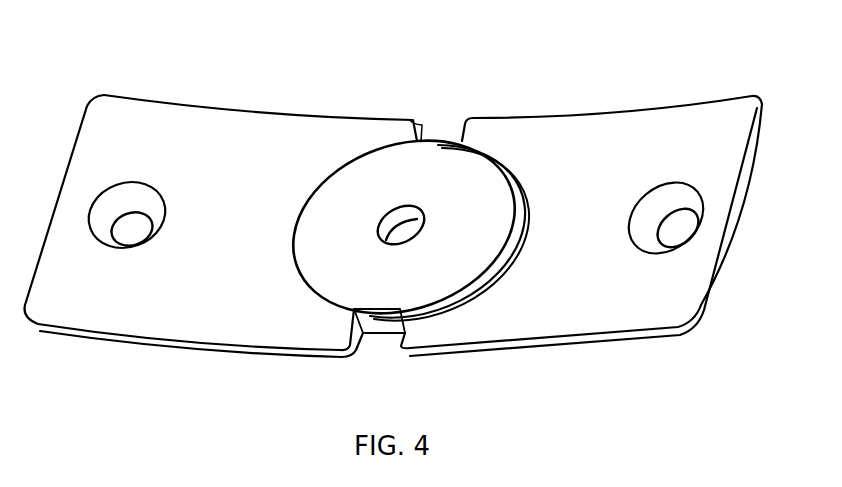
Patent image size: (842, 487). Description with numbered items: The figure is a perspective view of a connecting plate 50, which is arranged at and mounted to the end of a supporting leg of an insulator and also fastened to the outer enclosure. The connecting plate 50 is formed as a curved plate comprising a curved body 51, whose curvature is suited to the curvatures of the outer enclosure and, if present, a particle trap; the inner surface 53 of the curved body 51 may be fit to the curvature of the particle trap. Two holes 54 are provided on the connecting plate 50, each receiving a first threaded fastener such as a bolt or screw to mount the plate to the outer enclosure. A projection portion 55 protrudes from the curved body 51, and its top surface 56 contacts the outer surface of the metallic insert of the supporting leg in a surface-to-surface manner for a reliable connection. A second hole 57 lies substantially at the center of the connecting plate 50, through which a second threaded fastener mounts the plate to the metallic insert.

The connecting plate 50 is at (393, 186).
The curved body 51 is at (173, 127).
The inner surface 53 is at (557, 221).
The hole 54 is at (132, 232).
The projection portion 55 is at (378, 227).
The top surface 56 is at (333, 233).
The hole 57 is at (411, 220).